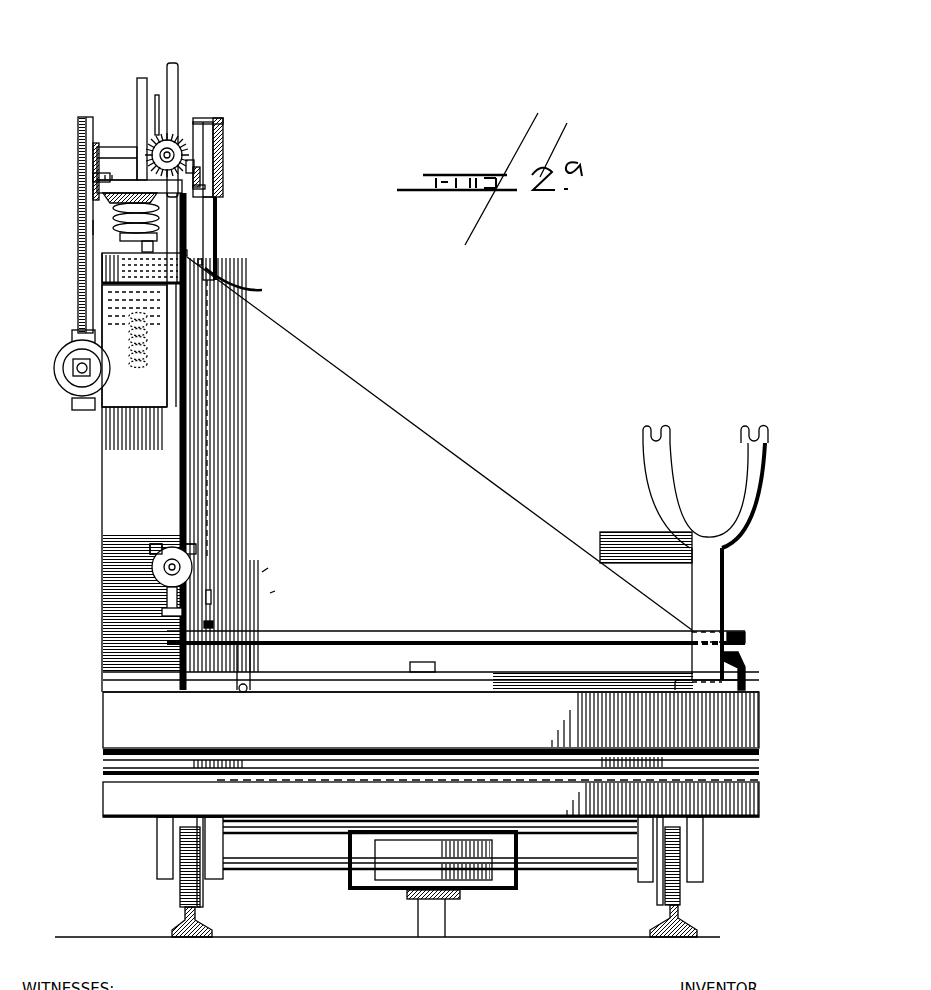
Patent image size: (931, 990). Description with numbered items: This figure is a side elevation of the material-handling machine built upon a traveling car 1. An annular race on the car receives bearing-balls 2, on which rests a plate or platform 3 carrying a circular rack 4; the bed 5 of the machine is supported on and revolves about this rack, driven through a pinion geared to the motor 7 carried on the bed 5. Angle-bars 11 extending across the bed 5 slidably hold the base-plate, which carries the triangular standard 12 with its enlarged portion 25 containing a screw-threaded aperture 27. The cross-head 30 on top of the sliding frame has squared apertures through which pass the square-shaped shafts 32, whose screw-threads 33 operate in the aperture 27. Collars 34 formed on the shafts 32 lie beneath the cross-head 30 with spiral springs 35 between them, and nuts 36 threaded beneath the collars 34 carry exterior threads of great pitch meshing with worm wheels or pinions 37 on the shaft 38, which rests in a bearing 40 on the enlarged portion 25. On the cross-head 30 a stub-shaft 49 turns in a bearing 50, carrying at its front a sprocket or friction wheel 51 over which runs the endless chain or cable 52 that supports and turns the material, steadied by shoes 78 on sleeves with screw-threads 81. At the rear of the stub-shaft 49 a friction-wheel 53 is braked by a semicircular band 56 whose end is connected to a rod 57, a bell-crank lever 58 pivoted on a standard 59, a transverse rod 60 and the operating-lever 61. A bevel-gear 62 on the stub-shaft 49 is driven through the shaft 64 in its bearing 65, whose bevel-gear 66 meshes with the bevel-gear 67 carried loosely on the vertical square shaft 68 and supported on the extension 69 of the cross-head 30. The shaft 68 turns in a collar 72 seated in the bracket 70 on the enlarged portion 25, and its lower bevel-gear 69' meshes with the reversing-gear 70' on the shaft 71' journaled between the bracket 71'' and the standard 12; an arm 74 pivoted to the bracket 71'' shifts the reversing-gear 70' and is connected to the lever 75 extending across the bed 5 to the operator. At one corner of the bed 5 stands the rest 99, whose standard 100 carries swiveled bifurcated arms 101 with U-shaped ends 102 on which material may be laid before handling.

The traveling car 1 is at (148, 808).
The bearing-balls 2 is at (258, 782).
The plate or platform 3 is at (103, 775).
The circular rack 4 is at (320, 758).
The bed 5 is at (431, 720).
The motor 7 is at (623, 532).
The angle-bars 11 is at (523, 654).
The triangular standard 12 is at (439, 443).
The enlarged portion 25 is at (117, 435).
The screw-threaded apertures 27 is at (150, 339).
The cross-head 30 is at (112, 198).
The square-shaped shafts 32 is at (141, 78).
The screw-threads 33 is at (72, 338).
The collars 34 is at (158, 244).
The spiral springs 35 is at (162, 216).
The nuts 36 is at (102, 263).
The worm wheels or pinions 37 is at (186, 253).
The shaft 38 is at (201, 261).
The bearing 40 is at (104, 304).
The stub-shaft 49 is at (97, 150).
The bearing 50 is at (118, 158).
The sprocket or friction wheel 51 is at (78, 128).
The endless chain or cable 52 is at (90, 229).
The friction-wheel 53 is at (223, 133).
The semicircular band 56 is at (213, 122).
The rod 57 is at (210, 232).
The bell-crank lever 58 is at (270, 568).
The standard 59 is at (275, 591).
The rod 60 is at (213, 626).
The operating-lever 61 is at (506, 631).
The bevel-gear 62 is at (184, 140).
The shaft 64 is at (200, 172).
The bearing 65 is at (156, 97).
The bevel-gear 66 is at (194, 163).
The bevel-gear 67 is at (205, 187).
The vertical square shaft 68 is at (178, 68).
The extension 69 is at (70, 172).
The bevel-gear 69' is at (161, 540).
The bracket 70 is at (111, 268).
The reversing-gear 70' is at (107, 550).
The shaft 71' is at (235, 546).
The bracket 71'' is at (113, 590).
The collar 72 is at (247, 286).
The arm 74 is at (165, 616).
The lever 75 is at (165, 641).
The shoes 78 is at (85, 410).
The screw-threads 81 is at (68, 380).
The rest 99 is at (695, 495).
The standard 100 is at (726, 585).
The bifurcated arms 101 is at (752, 510).
The U-shaped ends 102 is at (676, 440).